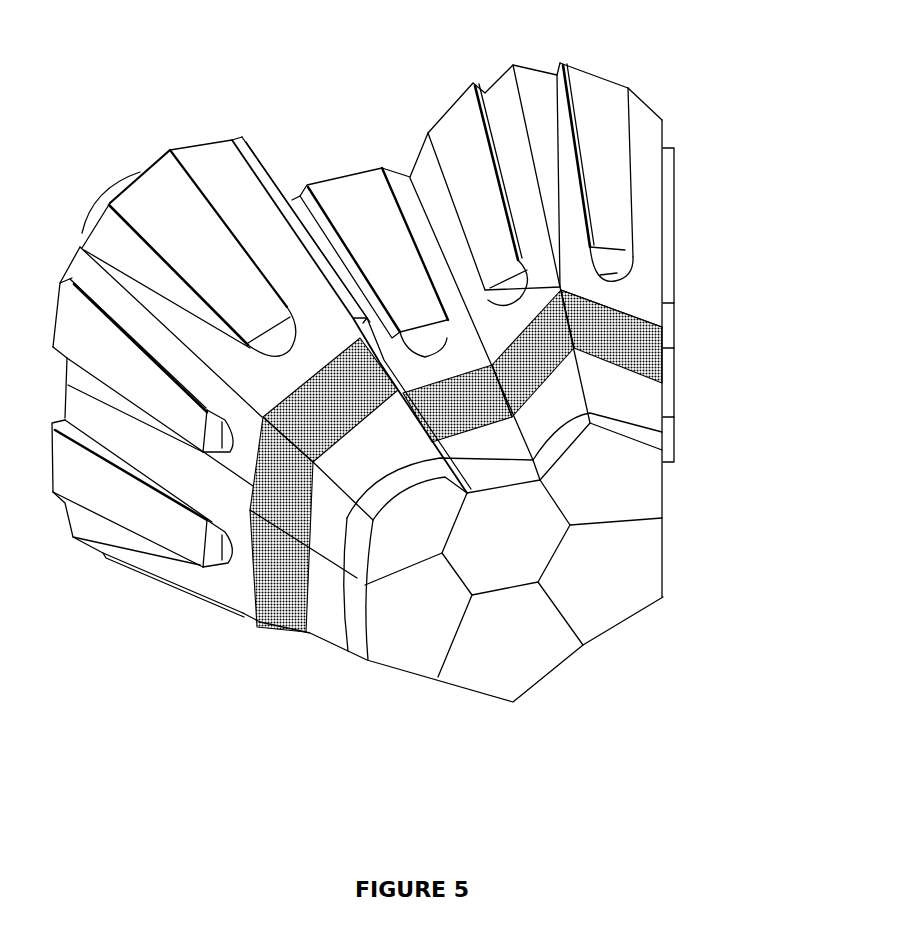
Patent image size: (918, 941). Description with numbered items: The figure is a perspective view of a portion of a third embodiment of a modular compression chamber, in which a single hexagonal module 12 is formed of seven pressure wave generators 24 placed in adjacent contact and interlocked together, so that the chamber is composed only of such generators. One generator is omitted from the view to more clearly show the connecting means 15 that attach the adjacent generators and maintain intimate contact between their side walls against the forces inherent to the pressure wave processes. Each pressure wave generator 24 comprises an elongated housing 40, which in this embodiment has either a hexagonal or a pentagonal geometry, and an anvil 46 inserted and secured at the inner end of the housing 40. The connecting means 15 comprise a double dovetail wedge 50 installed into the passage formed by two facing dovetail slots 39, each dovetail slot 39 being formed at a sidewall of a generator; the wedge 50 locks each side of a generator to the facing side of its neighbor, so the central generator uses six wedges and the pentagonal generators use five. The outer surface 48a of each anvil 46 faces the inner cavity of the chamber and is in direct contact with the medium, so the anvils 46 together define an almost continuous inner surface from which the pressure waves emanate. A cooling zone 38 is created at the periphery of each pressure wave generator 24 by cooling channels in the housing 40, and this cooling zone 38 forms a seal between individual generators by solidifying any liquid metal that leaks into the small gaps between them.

The hexagonal module 12 is at (676, 69).
The pressure wave generator 24 is at (503, 74).
The double dovetail wedge 50 is at (617, 167).
The connecting means 15 is at (637, 193).
The dovetail slot 39 is at (610, 273).
The housing 40 is at (635, 302).
The cooling zone 38 is at (648, 352).
The anvil 46 is at (615, 482).
The outer surface 48a is at (519, 562).